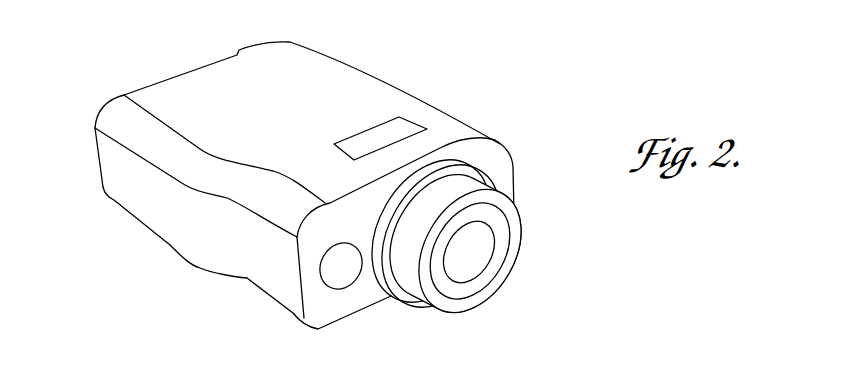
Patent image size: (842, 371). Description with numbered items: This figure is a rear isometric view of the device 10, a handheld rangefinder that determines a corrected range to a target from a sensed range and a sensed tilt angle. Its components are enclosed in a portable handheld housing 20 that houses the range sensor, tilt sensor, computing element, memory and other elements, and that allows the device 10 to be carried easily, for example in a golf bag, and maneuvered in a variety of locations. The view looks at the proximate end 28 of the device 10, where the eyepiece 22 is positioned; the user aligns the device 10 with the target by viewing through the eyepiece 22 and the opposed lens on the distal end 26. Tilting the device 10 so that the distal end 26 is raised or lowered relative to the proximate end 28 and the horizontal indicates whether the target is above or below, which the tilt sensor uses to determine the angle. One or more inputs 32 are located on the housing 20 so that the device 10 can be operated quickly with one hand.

The device 10 is at (124, 70).
The portable handheld housing 20 is at (500, 165).
The eyepiece 22 is at (478, 252).
The distal end 26 is at (205, 68).
The proximate end 28 is at (377, 293).
The inputs 32 is at (398, 133).